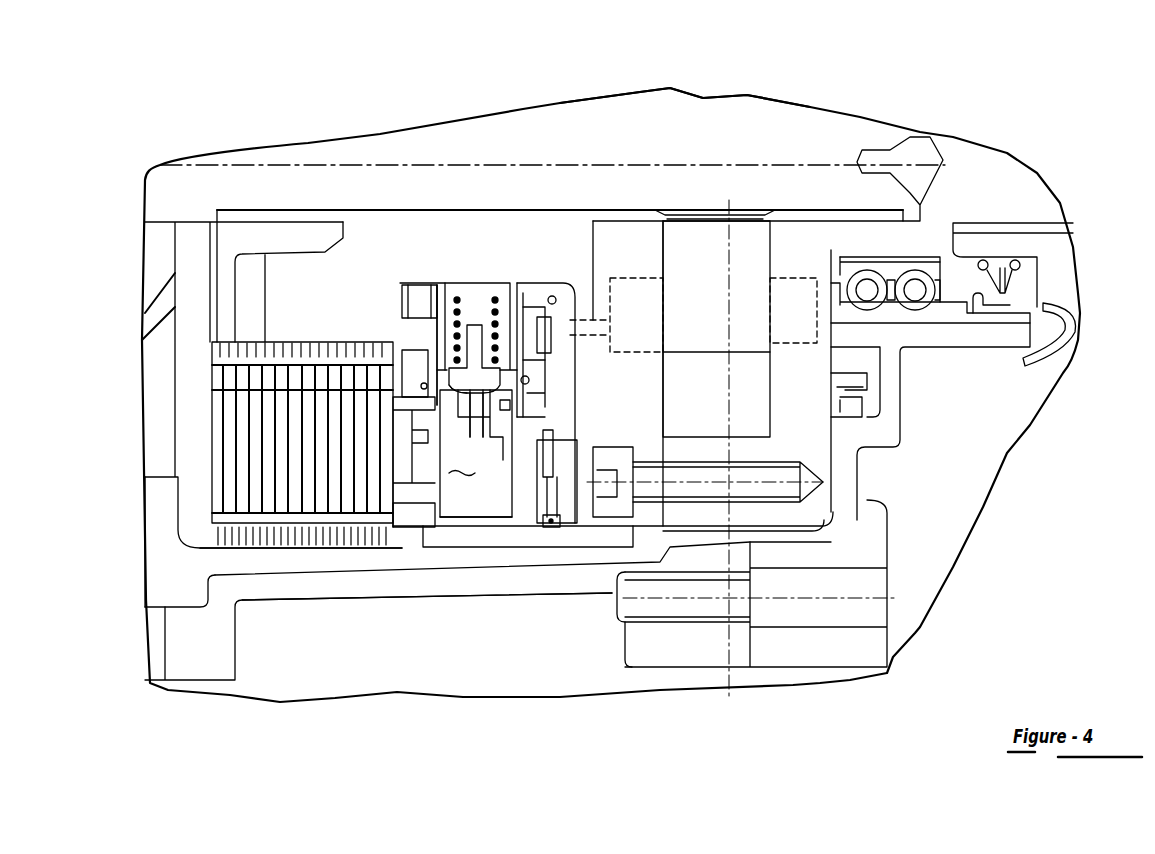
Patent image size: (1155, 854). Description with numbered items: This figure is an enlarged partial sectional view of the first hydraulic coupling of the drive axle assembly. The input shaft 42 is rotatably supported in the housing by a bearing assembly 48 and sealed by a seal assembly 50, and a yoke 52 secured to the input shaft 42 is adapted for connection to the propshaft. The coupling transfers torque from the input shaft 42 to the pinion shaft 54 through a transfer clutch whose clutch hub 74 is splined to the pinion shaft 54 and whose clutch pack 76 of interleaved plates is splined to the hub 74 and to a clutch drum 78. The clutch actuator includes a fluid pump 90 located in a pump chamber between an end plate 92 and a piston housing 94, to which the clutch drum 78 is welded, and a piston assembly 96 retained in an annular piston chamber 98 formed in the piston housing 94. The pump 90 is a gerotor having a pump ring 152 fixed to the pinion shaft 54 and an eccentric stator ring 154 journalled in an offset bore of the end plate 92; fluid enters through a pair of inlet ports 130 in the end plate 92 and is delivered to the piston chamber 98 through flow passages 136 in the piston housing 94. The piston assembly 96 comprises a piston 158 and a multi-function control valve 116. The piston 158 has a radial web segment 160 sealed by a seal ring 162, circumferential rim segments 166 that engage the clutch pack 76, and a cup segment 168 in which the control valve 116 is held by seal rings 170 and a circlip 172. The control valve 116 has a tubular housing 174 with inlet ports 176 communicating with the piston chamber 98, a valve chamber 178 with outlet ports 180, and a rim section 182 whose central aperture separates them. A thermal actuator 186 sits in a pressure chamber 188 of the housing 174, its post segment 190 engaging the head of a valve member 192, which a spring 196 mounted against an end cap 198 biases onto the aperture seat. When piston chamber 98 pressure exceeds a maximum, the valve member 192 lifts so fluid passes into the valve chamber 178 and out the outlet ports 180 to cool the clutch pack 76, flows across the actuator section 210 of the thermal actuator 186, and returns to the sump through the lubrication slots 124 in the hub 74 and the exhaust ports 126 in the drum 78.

The input shaft 42 is at (975, 150).
The bearing assembly 48 is at (915, 298).
The seal assembly 50 is at (1003, 295).
The yoke 52 is at (1013, 250).
The pinion shaft 54 is at (735, 125).
The clutch hub 74 is at (278, 233).
The clutch pack 76 is at (199, 506).
The clutch drum 78 is at (400, 537).
The fluid pump 90 is at (767, 250).
The end plate 92 is at (800, 510).
The piston housing 94 is at (624, 242).
The piston assembly 96 is at (545, 283).
The piston chamber 98 is at (567, 417).
The control valve 116 is at (457, 507).
The lubrication slots 124 is at (352, 345).
The exhaust ports 126 is at (523, 533).
The inlet ports 130 is at (789, 350).
The flow passages 136 is at (635, 352).
The pump ring 152 is at (718, 301).
The eccentric stator ring 154 is at (730, 403).
The piston 158 is at (560, 500).
The radial web segment 160 is at (537, 371).
The seal ring 162 is at (558, 273).
The circumferential rim segments 166 is at (370, 493).
The cup segment 168 is at (417, 292).
The seal rings 170 is at (426, 383).
The circlip 172 is at (428, 527).
The tubular housing 174 is at (523, 465).
The inlet ports 176 is at (517, 411).
The valve chamber 178 is at (478, 308).
The outlet ports 180 is at (437, 335).
The rim section 182 is at (437, 408).
The thermal actuator 186 is at (483, 507).
The pressure chamber 188 is at (498, 440).
The post segment 190 is at (480, 432).
The valve member 192 is at (463, 387).
The spring 196 is at (532, 283).
The end cap 198 is at (461, 295).
The actuator section 210 is at (464, 463).